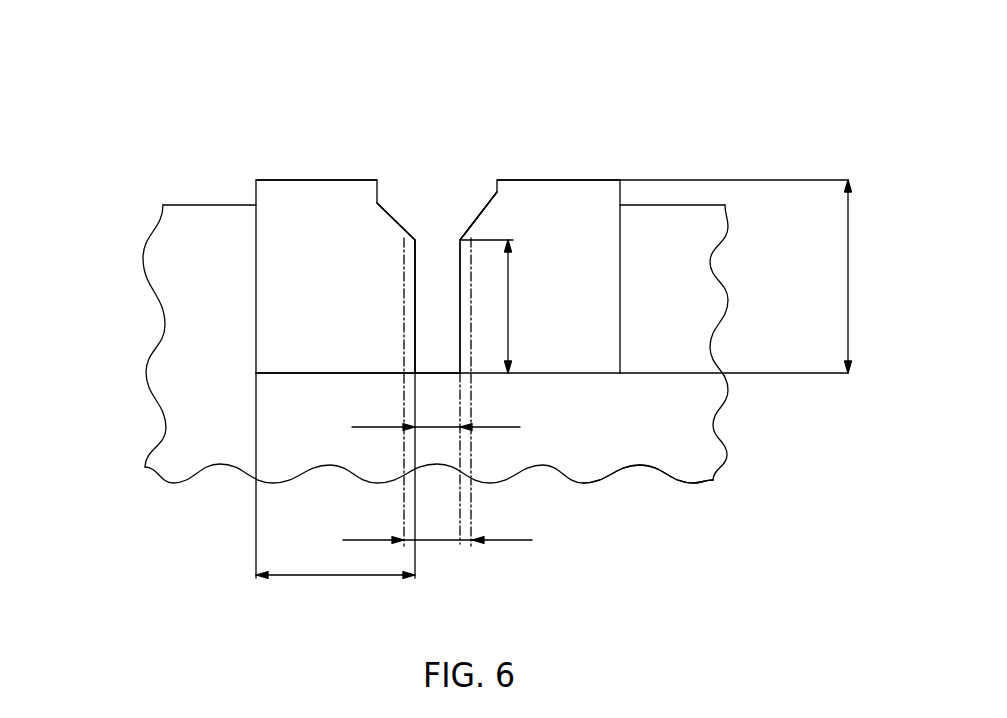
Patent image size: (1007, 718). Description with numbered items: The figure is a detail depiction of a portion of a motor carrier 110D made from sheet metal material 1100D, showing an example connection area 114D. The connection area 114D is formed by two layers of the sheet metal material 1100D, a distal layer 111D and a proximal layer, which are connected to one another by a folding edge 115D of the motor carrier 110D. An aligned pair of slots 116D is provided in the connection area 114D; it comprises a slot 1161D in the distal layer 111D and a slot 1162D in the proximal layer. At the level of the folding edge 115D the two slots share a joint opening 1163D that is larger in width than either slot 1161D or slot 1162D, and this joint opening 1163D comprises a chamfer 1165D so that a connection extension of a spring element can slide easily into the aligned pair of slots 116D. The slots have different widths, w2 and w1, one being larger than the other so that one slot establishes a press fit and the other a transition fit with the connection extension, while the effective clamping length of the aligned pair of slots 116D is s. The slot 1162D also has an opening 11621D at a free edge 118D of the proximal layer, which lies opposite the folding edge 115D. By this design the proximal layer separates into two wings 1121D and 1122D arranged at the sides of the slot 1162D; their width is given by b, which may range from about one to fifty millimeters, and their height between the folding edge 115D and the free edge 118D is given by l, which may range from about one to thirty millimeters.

The sheet metal material 1100D is at (153, 404).
The motor carrier 110D is at (603, 527).
The distal layer 111D is at (650, 437).
The wing 1122D is at (290, 218).
The wing 1121D is at (587, 283).
The connection area 114D is at (615, 388).
The folding edge 115D is at (313, 180).
The chamfer 1165D is at (395, 220).
The joint opening 1163D is at (407, 180).
The aligned pair of slots 116D is at (425, 170).
The slot 1161D is at (410, 287).
The slot 1162D is at (438, 318).
The opening 11621D is at (435, 387).
The free edge 118D is at (312, 378).
The effective clamping length s is at (510, 305).
The height of the wings l is at (850, 270).
The width of the wings b is at (330, 578).
The slot width w1 is at (500, 427).
The slot width w2 is at (505, 540).